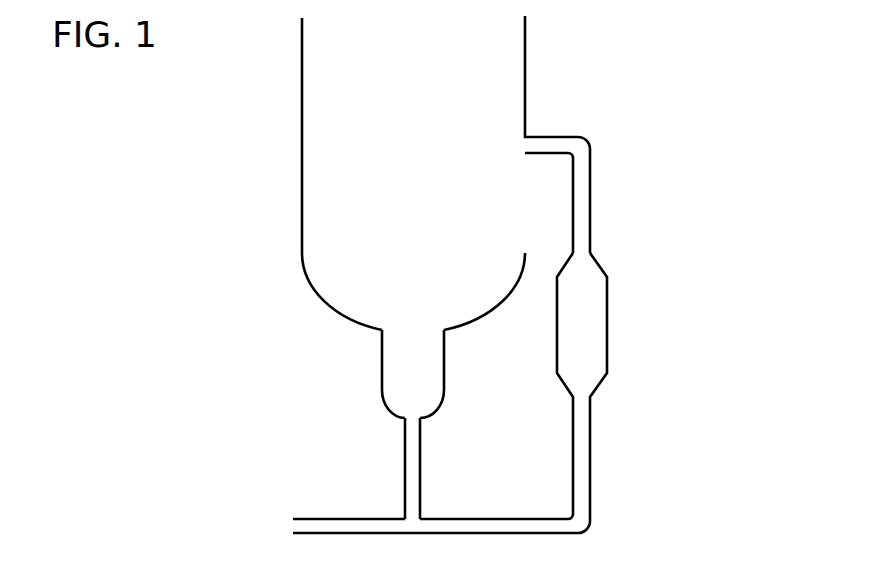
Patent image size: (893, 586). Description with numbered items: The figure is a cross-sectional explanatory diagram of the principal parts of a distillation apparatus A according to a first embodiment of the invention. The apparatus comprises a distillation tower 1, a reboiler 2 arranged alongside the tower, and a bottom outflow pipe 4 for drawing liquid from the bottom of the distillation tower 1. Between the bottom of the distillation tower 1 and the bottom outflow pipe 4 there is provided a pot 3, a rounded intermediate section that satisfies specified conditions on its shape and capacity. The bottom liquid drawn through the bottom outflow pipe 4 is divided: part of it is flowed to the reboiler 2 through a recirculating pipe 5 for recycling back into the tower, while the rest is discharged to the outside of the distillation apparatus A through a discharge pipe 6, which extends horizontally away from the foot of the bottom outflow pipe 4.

The distillation tower 1 is at (446, 173).
The reboiler 2 is at (615, 286).
The pot 3 is at (451, 358).
The bottom outflow pipe 4 is at (434, 455).
The recirculating pipe 5 is at (461, 507).
The discharge pipe 6 is at (314, 509).
The distillation apparatus A is at (621, 96).